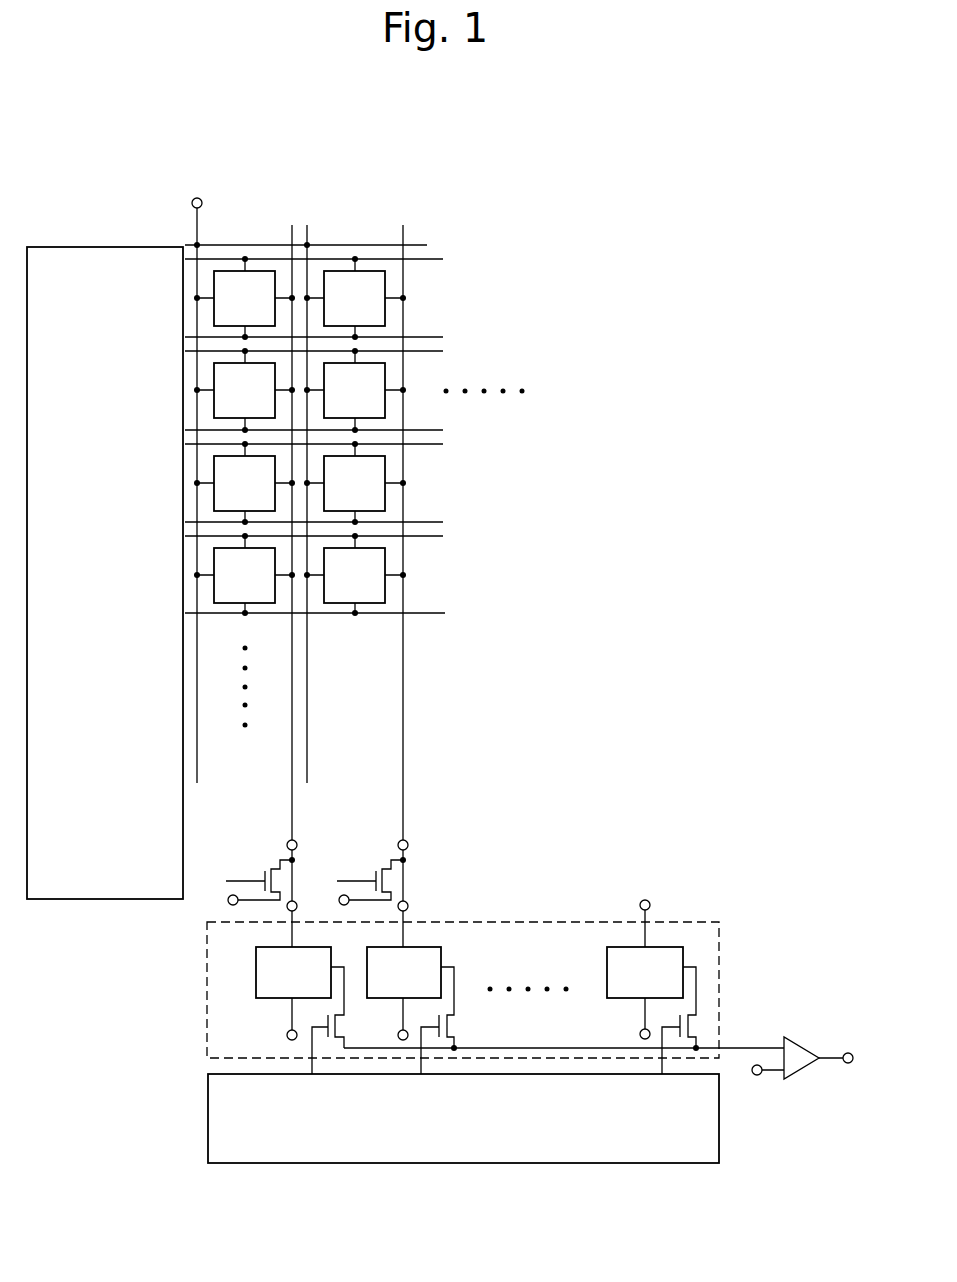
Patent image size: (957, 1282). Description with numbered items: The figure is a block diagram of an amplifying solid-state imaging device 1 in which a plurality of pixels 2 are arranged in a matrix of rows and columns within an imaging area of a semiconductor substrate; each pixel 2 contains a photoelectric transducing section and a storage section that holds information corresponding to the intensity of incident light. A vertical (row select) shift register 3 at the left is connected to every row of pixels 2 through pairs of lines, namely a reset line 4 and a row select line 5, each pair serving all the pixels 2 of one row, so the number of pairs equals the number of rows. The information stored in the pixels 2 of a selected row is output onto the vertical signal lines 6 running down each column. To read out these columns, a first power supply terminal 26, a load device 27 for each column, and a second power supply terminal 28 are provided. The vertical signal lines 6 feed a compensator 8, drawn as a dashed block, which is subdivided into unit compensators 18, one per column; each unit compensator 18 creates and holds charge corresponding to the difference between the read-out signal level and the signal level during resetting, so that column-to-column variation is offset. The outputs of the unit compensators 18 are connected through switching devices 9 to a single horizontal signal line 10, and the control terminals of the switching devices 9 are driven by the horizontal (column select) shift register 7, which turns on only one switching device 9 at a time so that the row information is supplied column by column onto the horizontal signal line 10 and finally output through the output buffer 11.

The amplifying solid-state imaging device 1 is at (355, 469).
The pixel 2 is at (258, 271).
The vertical (row select) shift register 3 is at (105, 247).
The reset line 4 is at (440, 258).
The row select line 5 is at (440, 336).
The vertical signal line 6 is at (292, 237).
The horizontal (column select) shift register 7 is at (280, 1163).
The compensator 8 is at (697, 921).
The switching device 9 is at (347, 1028).
The horizontal signal line 10 is at (745, 1047).
The output buffer (output amplifier) 11 is at (807, 1043).
The unit compensator 18 is at (256, 973).
The first power supply terminal (Vdd) 26 is at (198, 197).
The load device 27 is at (265, 870).
The second power supply terminal (Vss) 28 is at (228, 904).